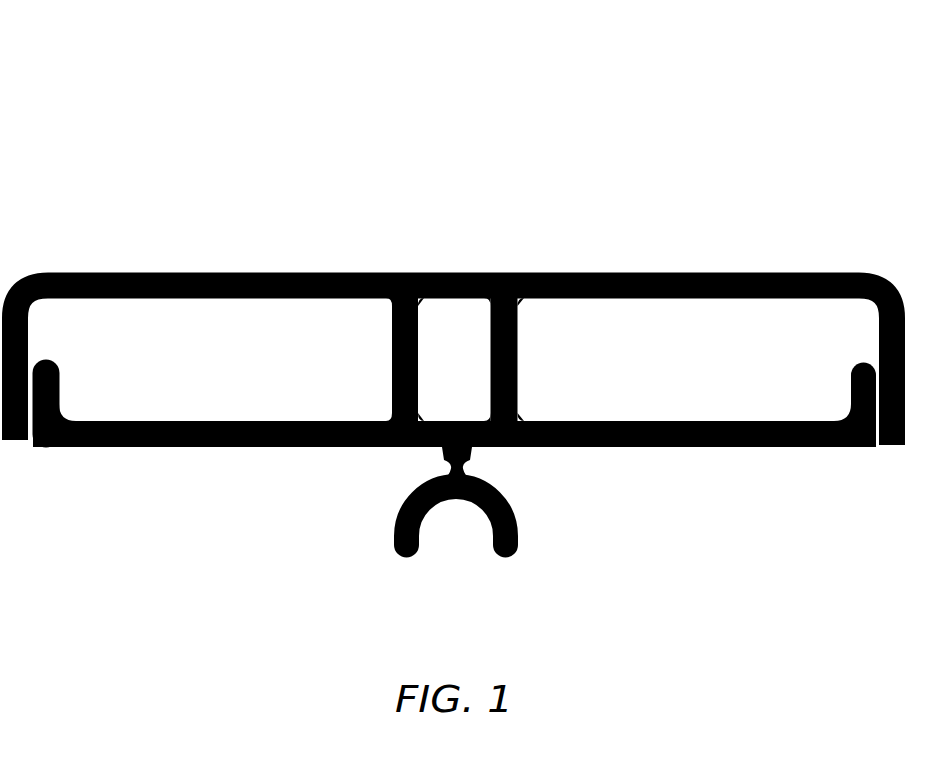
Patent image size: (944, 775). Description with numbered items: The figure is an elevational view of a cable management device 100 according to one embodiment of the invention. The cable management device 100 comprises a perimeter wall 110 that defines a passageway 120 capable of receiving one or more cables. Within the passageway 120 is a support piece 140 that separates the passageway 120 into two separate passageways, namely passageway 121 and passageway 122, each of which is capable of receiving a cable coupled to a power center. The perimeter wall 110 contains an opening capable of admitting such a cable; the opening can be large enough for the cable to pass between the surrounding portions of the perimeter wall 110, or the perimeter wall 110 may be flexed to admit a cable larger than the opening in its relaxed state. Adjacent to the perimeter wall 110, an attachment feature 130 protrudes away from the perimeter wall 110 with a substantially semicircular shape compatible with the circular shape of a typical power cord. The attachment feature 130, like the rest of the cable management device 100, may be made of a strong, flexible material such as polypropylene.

The cable management device 100 is at (172, 100).
The perimeter wall 110 is at (727, 274).
The passageway 120 is at (252, 333).
The passageway 121 is at (693, 383).
The passageway 122 is at (162, 393).
The attachment feature 130 is at (397, 520).
The support piece 140 is at (490, 339).